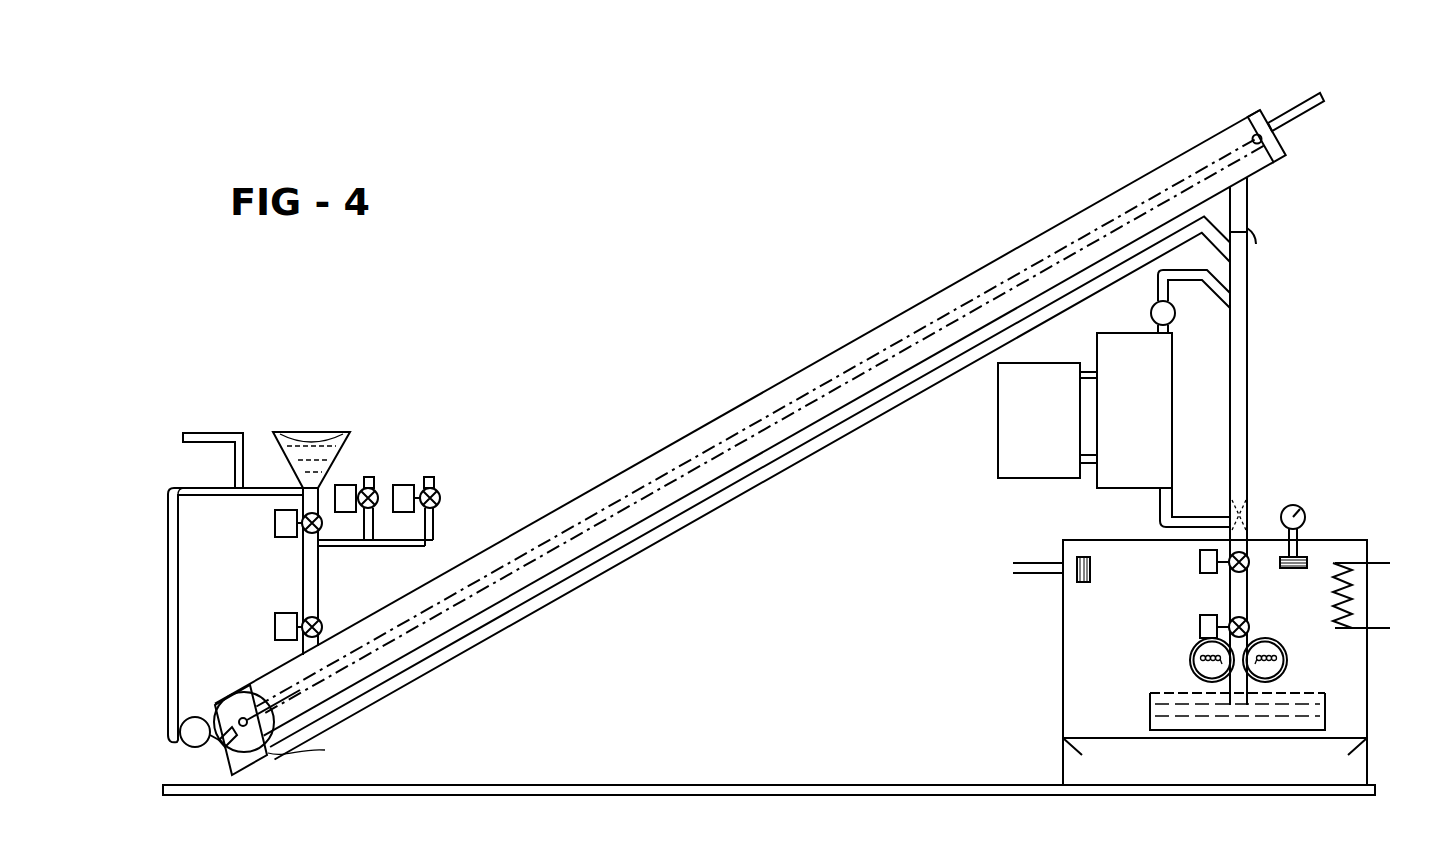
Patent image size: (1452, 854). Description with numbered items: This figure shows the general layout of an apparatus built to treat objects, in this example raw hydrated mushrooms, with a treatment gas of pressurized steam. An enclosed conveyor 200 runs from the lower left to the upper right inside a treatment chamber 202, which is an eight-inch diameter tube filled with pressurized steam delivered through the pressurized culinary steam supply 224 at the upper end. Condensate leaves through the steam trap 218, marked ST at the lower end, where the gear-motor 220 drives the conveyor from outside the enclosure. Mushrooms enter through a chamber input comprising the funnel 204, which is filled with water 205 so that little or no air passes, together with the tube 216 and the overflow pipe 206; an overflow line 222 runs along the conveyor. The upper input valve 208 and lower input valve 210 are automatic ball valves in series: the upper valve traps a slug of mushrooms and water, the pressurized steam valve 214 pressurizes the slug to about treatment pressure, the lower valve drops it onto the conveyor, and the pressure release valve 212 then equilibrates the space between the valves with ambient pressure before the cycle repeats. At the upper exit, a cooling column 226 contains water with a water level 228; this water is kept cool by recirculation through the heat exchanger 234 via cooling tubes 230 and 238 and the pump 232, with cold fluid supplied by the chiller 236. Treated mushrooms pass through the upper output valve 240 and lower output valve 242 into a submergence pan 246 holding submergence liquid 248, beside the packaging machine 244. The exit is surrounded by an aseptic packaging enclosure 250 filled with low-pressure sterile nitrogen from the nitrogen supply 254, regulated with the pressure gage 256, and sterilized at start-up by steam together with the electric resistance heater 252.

The conveyor 200 is at (752, 426).
The treatment chamber 202 is at (925, 302).
The funnel 204 is at (300, 432).
The water 205 is at (330, 443).
The overflow pipe 206 is at (195, 432).
The upper input valve 208 is at (306, 548).
The lower input valve 210 is at (318, 612).
The pressure release valve 212 is at (370, 488).
The pressurized steam valve 214 is at (440, 495).
The tube 216 is at (168, 612).
The steam trap 218 is at (180, 742).
The gear-motor 220 is at (253, 748).
The overflow line 222 is at (470, 650).
The pressurized culinary steam supply 224 is at (1295, 108).
The cooling column 226 is at (1248, 207).
The water level 228 is at (1250, 240).
The cooling tube 230 is at (1175, 283).
The pump 232 is at (1175, 325).
The heat exchanger 234 is at (1093, 353).
The chiller 236 is at (998, 455).
The cooling tube 238 is at (1200, 517).
The upper output valve 240 is at (1255, 555).
The lower output valve 242 is at (1250, 627).
The packaging machine 244 is at (1288, 660).
The submergence pan 246 is at (1326, 731).
The submergence liquid 248 is at (1187, 727).
The aseptic packaging enclosure 250 is at (1367, 540).
The heater 252 is at (1355, 598).
The nitrogen supply 254 is at (1035, 575).
The pressure gage 256 is at (1302, 510).